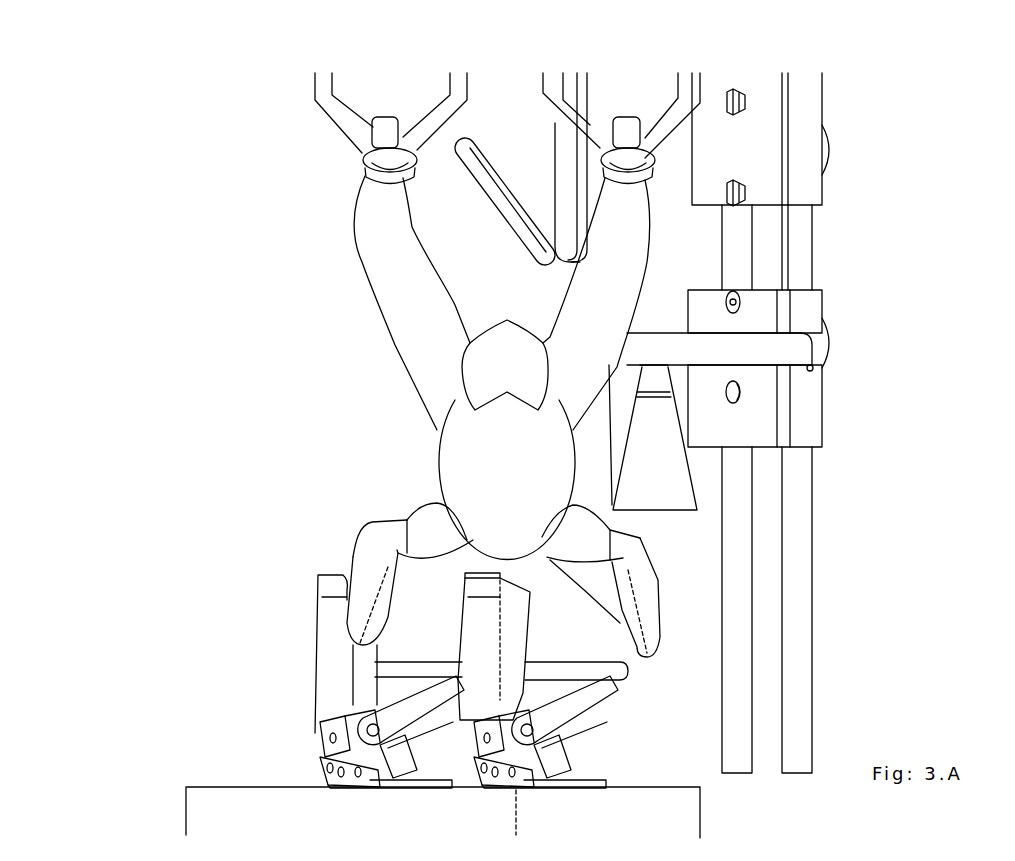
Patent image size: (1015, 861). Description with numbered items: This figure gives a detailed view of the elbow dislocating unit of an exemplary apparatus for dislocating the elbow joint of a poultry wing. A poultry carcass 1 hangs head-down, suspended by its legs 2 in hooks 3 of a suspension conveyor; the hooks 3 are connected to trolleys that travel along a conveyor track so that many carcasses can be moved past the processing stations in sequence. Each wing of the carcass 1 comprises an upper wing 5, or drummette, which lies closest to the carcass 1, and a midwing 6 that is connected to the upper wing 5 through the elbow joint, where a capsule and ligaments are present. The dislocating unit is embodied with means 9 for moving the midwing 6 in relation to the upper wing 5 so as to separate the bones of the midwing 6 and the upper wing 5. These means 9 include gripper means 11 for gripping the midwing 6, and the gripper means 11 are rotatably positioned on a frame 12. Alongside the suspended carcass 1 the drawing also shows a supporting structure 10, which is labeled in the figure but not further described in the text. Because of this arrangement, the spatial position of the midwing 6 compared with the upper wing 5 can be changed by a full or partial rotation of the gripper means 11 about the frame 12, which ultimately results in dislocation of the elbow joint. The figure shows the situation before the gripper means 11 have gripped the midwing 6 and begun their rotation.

The poultry carcass 1 is at (478, 423).
The legs 2 is at (362, 262).
The hooks 3 is at (589, 139).
The upper wing 5 is at (410, 519).
The midwing 6 is at (362, 560).
The means for moving the midwing 9 is at (255, 700).
The support frame 10 is at (843, 403).
The gripper means 11 is at (333, 657).
The frame 12 is at (247, 800).